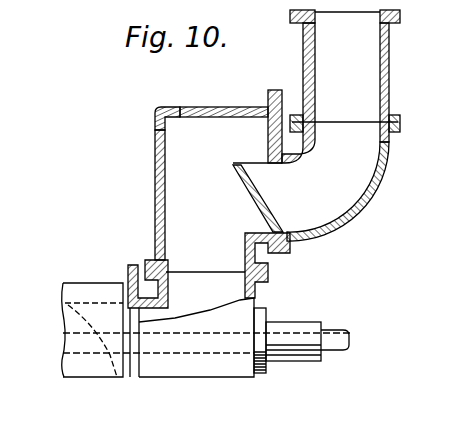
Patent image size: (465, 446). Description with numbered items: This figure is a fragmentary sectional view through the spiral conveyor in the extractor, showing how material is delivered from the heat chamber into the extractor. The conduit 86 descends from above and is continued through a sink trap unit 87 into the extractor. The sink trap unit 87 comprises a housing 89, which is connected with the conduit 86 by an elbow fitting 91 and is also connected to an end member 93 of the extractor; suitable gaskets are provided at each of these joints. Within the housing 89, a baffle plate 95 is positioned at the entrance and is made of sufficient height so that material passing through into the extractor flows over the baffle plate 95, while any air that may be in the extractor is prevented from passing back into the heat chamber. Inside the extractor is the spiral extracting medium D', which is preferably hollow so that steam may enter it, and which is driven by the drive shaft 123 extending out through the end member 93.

The conduit 86 is at (390, 102).
The sink trap unit 87 is at (193, 199).
The housing 89 is at (156, 121).
The elbow fitting 91 is at (374, 203).
The end member 93 is at (237, 307).
The baffle plate 95 is at (243, 187).
The drive shaft 123 is at (346, 341).
The spiral extracting medium D' is at (92, 311).